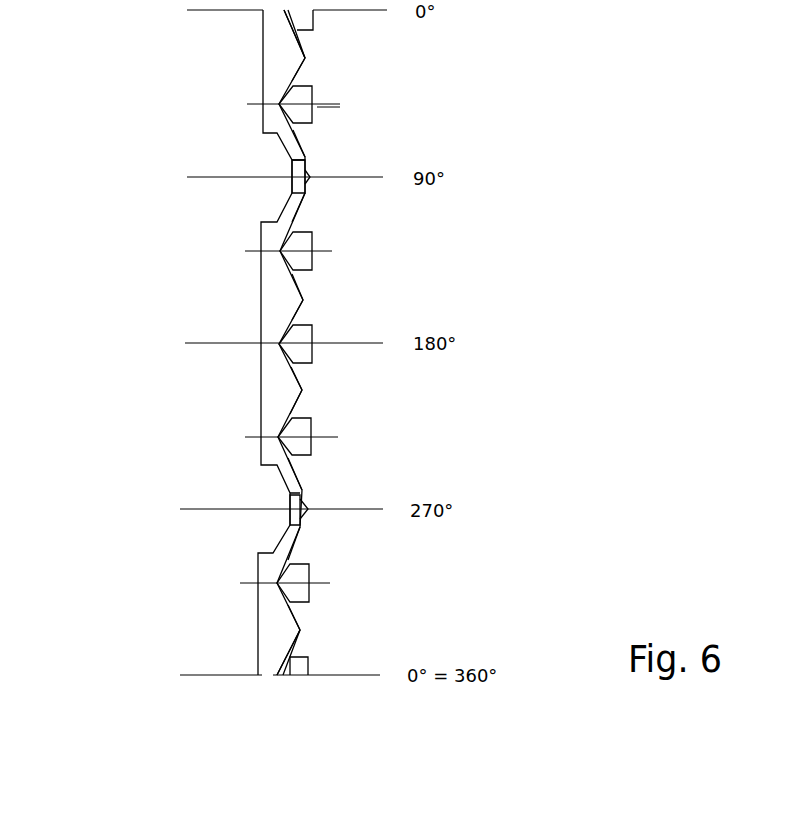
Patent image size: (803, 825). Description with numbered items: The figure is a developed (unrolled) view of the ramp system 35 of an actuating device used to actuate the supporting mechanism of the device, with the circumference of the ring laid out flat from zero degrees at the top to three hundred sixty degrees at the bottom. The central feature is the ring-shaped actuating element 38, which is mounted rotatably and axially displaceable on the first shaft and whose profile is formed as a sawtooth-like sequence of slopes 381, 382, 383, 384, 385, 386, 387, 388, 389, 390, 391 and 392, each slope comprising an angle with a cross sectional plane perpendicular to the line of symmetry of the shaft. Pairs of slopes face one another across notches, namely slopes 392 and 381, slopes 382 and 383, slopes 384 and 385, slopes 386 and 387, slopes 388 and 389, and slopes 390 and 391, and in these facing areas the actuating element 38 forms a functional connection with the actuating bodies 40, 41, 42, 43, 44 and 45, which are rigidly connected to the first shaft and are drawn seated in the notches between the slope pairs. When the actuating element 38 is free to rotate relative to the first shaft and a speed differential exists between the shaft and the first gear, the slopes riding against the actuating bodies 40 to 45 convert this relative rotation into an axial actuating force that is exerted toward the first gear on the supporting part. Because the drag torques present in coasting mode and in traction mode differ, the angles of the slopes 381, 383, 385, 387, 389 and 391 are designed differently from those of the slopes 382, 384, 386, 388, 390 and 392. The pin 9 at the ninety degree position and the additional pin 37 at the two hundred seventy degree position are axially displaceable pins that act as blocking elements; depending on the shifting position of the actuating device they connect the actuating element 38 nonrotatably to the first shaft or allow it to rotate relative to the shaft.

The pin 9 is at (290, 177).
The ramp system 35 is at (262, 298).
The pin 37 is at (290, 507).
The actuating element 38 is at (285, 51).
The actuating body 40 is at (303, 112).
The actuating body 41 is at (307, 247).
The actuating body 42 is at (307, 345).
The actuating body 43 is at (307, 436).
The actuating body 44 is at (305, 583).
The actuating body 45 is at (292, 668).
The slope 381 is at (293, 38).
The slope 382 is at (297, 75).
The slope 383 is at (300, 137).
The slope 384 is at (300, 208).
The slope 385 is at (300, 268).
The slope 386 is at (300, 305).
The slope 387 is at (300, 368).
The slope 388 is at (300, 398).
The slope 389 is at (293, 463).
The slope 390 is at (303, 547).
The slope 391 is at (295, 612).
The slope 392 is at (292, 655).